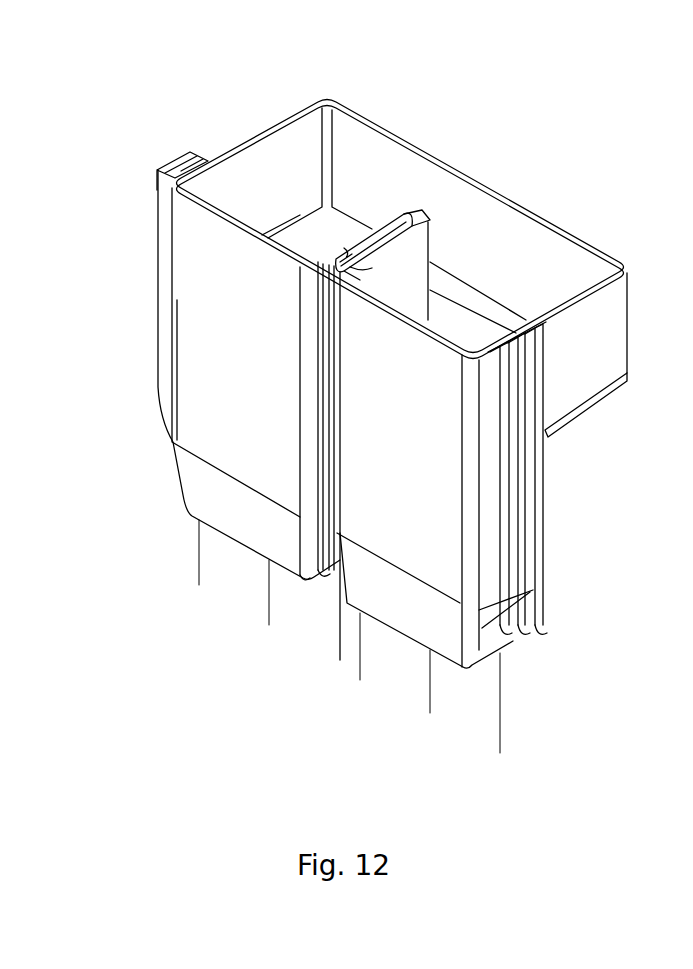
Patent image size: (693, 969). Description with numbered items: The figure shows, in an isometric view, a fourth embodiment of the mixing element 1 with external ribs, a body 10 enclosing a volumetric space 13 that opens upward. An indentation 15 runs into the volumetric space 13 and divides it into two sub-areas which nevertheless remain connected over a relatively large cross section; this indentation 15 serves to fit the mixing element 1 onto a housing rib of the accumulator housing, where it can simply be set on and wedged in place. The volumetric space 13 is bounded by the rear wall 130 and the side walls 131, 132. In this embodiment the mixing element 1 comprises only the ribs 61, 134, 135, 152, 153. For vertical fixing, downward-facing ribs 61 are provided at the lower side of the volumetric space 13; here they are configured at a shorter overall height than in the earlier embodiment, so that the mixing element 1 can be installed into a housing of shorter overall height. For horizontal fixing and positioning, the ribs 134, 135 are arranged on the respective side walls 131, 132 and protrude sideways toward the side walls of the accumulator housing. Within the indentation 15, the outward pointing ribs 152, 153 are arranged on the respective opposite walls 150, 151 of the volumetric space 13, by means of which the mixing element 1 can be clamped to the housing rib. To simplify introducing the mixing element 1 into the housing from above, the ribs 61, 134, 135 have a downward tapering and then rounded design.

The mixing element 1 is at (195, 116).
The housing 10 is at (233, 183).
The volumetric space 13 is at (597, 327).
The indentation 15 is at (407, 213).
The ribs 61 is at (580, 417).
The rear wall 130 is at (417, 190).
The side wall 131 is at (283, 220).
The side wall 132 is at (600, 384).
The rib 134 is at (510, 630).
The rib 135 is at (173, 152).
The wall 150 is at (367, 223).
The wall 151 is at (433, 247).
The rib 152 is at (327, 260).
The rib 153 is at (350, 267).